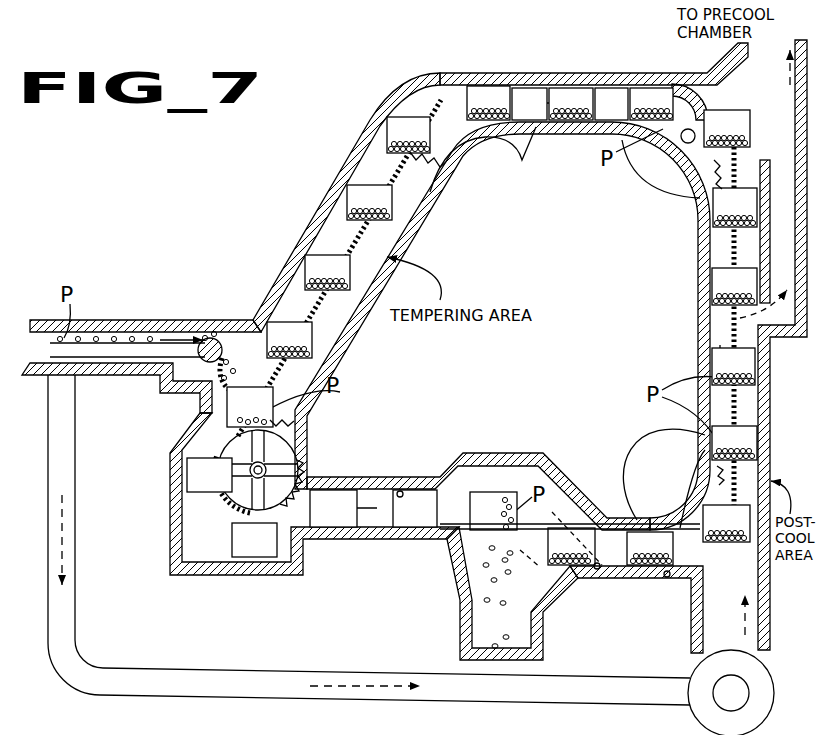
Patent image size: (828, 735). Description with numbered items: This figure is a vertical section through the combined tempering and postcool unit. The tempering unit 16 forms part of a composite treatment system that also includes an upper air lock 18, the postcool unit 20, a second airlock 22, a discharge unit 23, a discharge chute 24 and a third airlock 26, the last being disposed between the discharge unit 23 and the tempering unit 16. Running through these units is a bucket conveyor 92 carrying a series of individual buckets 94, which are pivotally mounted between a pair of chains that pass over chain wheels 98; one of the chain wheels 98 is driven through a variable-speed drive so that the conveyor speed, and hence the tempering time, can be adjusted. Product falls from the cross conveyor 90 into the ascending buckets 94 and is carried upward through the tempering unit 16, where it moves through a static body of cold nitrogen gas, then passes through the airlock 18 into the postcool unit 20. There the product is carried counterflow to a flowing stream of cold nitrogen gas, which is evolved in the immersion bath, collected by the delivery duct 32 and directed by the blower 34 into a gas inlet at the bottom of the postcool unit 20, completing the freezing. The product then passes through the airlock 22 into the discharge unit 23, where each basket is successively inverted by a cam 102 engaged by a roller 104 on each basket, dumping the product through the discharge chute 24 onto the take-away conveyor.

The tempering unit 16 is at (355, 138).
The airlock 18 is at (430, 73).
The postcool unit 20 is at (765, 422).
The second airlock 22 is at (639, 512).
The discharge unit 23 is at (556, 462).
The discharge chute 24 is at (466, 631).
The third airlock 26 is at (330, 477).
The delivery duct 32 is at (188, 677).
The blower 34 is at (703, 673).
The cross conveyor 90 is at (106, 333).
The bucket conveyor 92 is at (378, 165).
The buckets 94 is at (643, 123).
The chain wheels 98 is at (414, 160).
The cam 102 is at (580, 569).
The roller 104 is at (394, 490).